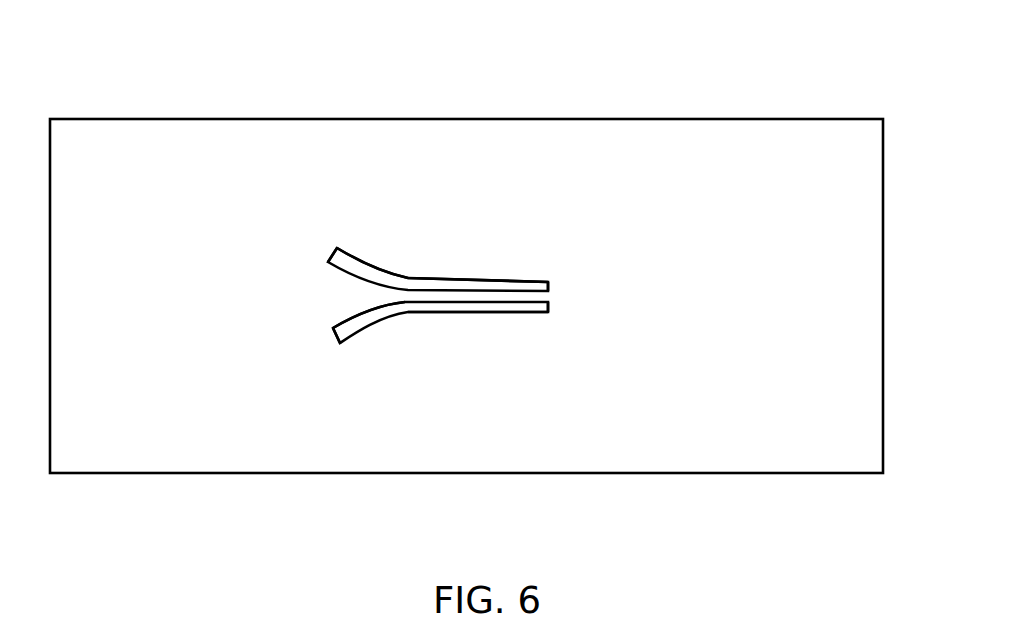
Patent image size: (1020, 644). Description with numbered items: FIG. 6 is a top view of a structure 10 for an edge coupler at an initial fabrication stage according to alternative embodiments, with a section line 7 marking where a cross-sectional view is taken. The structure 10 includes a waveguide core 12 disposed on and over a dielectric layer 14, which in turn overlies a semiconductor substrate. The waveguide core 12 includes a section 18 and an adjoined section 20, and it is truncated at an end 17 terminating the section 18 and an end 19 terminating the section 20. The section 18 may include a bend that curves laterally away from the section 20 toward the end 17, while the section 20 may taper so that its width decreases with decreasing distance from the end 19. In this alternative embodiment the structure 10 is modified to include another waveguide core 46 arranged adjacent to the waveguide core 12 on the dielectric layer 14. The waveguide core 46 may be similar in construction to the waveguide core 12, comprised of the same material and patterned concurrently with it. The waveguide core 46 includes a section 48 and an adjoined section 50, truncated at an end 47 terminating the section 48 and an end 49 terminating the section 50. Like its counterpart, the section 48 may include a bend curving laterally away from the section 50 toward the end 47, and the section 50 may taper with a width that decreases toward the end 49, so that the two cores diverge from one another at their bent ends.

The structure 10 is at (131, 79).
The dielectric layer 14 is at (830, 351).
The section line 7- 7 is at (430, 78).
The waveguide core 12 is at (529, 255).
The end 17 is at (333, 253).
The section 18 is at (372, 275).
The end 19 is at (548, 285).
The section 20 is at (463, 287).
The waveguide core 46 is at (541, 335).
The end 47 is at (330, 333).
The section 48 is at (368, 316).
The end 49 is at (548, 307).
The section 50 is at (472, 307).